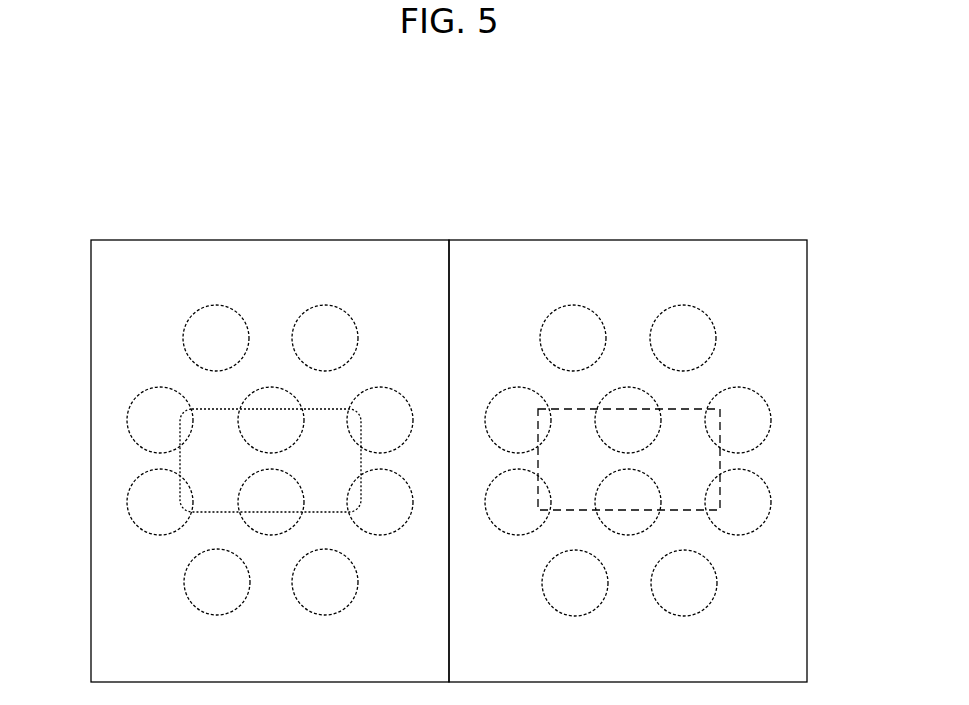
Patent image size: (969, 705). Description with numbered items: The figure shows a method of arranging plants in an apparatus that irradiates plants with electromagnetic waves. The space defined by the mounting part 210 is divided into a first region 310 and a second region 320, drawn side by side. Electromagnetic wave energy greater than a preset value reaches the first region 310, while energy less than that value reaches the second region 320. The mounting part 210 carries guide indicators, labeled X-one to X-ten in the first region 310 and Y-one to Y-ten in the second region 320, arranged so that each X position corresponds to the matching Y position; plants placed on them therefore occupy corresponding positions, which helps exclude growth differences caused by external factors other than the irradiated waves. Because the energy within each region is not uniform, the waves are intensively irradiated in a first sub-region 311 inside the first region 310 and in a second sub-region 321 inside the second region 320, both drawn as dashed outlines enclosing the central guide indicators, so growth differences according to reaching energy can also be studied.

The mounting part 210 is at (466, 170).
The first region 310 is at (132, 240).
The second region 320 is at (767, 240).
The first sub-region 311 is at (180, 463).
The second sub-region 321 is at (720, 462).